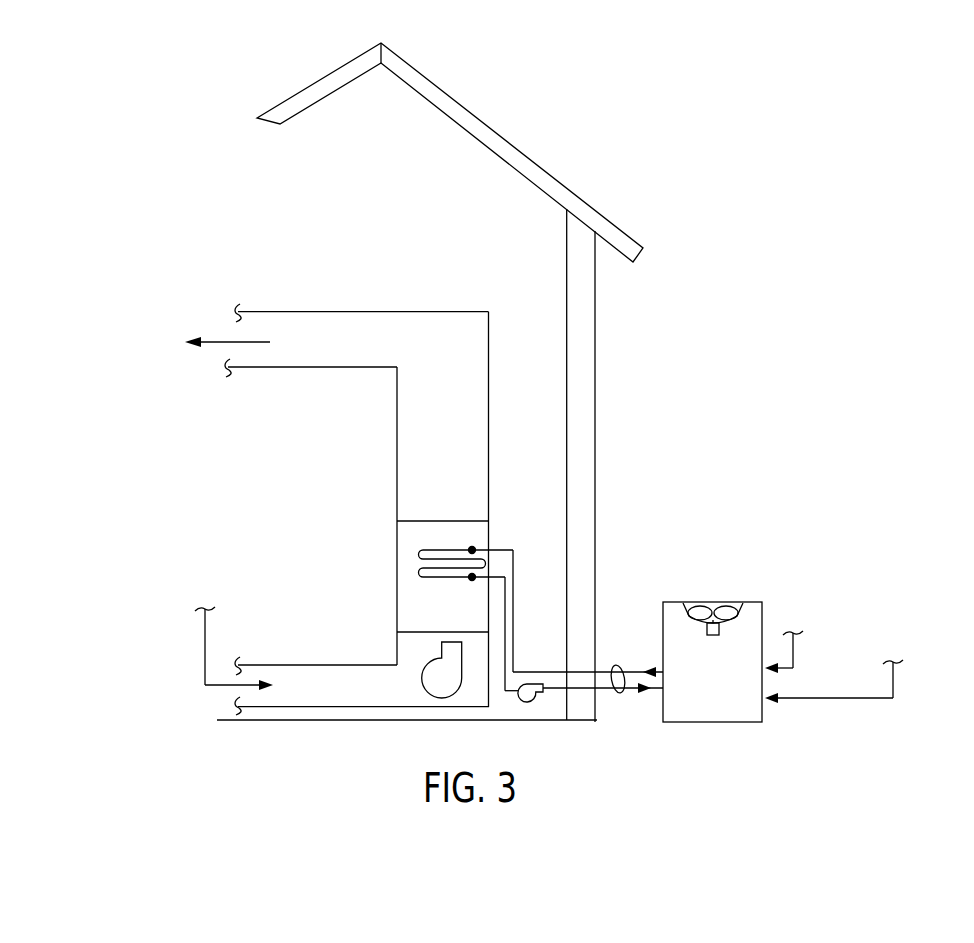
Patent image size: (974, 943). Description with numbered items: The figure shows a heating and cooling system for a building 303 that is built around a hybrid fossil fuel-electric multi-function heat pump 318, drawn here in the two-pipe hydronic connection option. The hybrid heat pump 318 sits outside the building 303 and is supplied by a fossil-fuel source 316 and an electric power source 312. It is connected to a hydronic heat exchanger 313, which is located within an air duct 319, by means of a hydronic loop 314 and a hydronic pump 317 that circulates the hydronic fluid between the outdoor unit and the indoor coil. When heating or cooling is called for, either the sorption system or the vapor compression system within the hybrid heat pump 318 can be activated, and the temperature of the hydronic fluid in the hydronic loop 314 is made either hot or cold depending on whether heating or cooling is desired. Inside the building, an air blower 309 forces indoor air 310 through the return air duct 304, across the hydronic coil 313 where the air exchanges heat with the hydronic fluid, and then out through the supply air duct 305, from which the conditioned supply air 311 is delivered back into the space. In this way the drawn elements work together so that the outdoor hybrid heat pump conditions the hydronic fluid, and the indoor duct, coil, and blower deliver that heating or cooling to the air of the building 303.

The building 303 is at (588, 350).
The return air duct 304 is at (333, 678).
The supply air duct 305 is at (369, 328).
The air blower 309 is at (457, 692).
The indoor air 310 is at (205, 660).
The supply air outlet 311 is at (218, 340).
The electric power source 312 is at (895, 687).
The hydronic heat exchanger 313 is at (407, 602).
The hydronic loop 314 is at (622, 665).
The fossil-fuel source 316 is at (798, 665).
The hydronic pump 317 is at (530, 683).
The hybrid fossil fuel-electric multi-function heat pump 318 is at (725, 672).
The air duct 319 is at (397, 535).